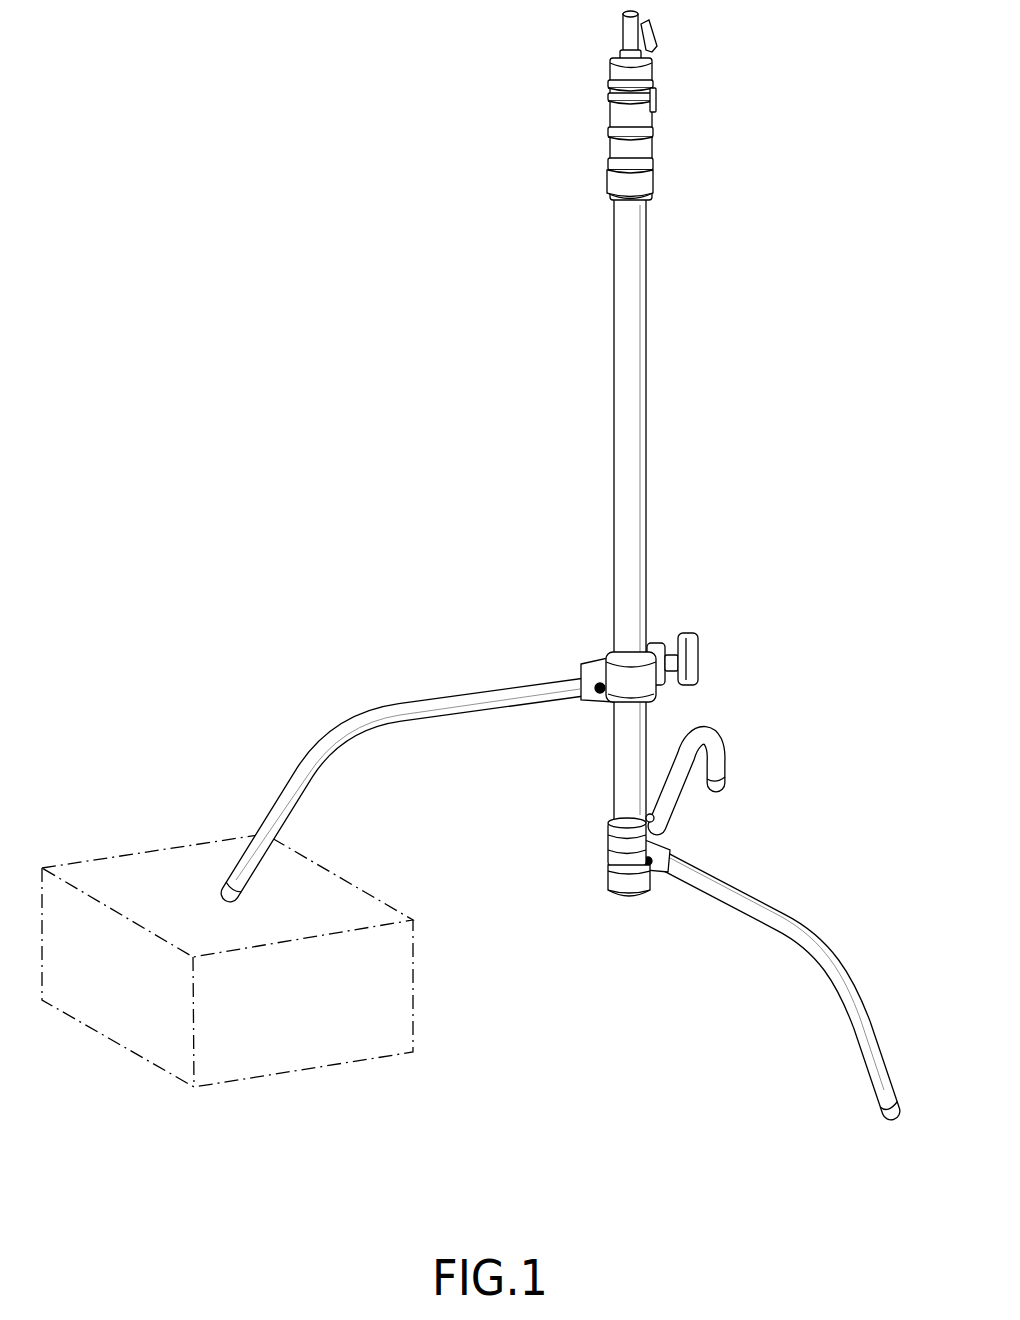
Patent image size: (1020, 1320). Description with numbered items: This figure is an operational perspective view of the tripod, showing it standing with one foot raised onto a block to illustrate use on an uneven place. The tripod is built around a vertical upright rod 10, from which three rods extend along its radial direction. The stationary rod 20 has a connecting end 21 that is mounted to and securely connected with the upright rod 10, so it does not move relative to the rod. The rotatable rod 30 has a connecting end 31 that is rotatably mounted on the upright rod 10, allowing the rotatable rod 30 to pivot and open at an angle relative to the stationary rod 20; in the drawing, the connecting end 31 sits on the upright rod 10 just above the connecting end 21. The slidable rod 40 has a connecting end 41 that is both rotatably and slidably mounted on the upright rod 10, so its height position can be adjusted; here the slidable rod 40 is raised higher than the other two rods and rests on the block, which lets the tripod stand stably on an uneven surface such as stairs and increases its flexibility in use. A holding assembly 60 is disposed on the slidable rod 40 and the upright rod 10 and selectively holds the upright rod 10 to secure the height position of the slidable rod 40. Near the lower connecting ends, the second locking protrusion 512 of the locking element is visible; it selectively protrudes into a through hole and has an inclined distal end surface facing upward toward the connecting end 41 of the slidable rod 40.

The upright rod 10 is at (641, 372).
The stationary rod 20 is at (677, 780).
The connecting end 21 is at (613, 883).
The rotatable rod 30 is at (763, 925).
The connecting end 31 is at (610, 847).
The slidable rod 40 is at (442, 695).
The connecting end 41 is at (623, 672).
The holding assembly 60 is at (666, 639).
The second locking protrusion 512 is at (654, 818).